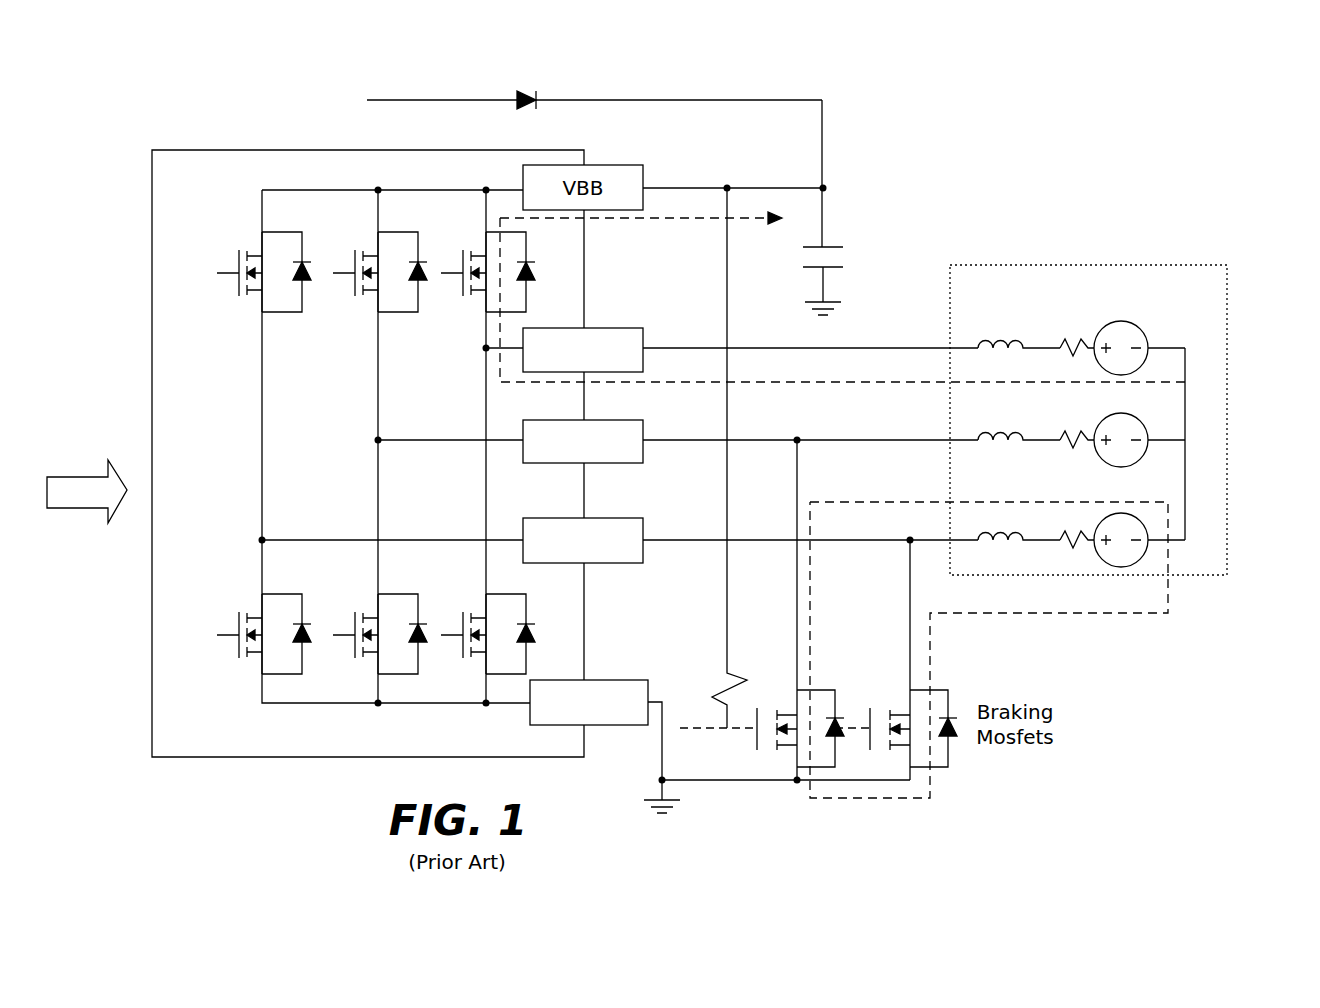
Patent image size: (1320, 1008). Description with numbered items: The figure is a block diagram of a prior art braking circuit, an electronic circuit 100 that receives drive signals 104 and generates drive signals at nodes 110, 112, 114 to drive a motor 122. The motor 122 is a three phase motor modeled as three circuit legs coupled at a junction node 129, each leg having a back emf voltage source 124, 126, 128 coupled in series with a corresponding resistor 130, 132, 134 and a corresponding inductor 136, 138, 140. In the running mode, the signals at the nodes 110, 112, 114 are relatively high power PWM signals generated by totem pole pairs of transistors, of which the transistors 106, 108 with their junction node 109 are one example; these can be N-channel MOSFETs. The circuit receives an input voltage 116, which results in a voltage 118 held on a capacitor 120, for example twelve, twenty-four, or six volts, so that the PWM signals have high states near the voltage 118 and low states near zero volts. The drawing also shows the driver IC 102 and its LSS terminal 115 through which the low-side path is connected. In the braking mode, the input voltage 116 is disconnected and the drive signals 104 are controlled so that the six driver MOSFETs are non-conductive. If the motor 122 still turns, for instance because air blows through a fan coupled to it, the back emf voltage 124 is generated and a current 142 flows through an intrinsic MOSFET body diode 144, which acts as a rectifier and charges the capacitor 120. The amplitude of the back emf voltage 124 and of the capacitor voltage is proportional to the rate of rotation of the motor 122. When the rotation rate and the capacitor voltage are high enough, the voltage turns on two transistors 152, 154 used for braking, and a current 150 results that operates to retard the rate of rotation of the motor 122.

The electronic circuit 100 is at (1035, 108).
The driver IC 102 is at (562, 148).
The drive signals 104 is at (95, 508).
The transistor 106 is at (262, 232).
The transistor 108 is at (262, 594).
The junction node 109 is at (262, 540).
The node 110 is at (622, 328).
The node 112 is at (645, 428).
The node 114 is at (630, 518).
The LSS terminal 115 is at (622, 680).
The input voltage 116 is at (400, 100).
The voltage 118 is at (823, 150).
The capacitor 120 is at (838, 247).
The motor 122 is at (1165, 265).
The back emf voltage source 124 is at (1143, 330).
The back emf voltage source 126 is at (1143, 420).
The back emf voltage source 128 is at (1148, 558).
The junction node 129 is at (1185, 487).
The resistor 130 is at (1072, 352).
The resistor 132 is at (1072, 445).
The resistor 134 is at (1072, 545).
The inductor 136 is at (1003, 340).
The inductor 138 is at (1003, 430).
The inductor 140 is at (1003, 530).
The current 142 is at (843, 382).
The intrinsic MOSFET body diode 144 is at (523, 258).
The current 150 is at (812, 562).
The transistor 152 is at (778, 752).
The transistor 154 is at (880, 710).